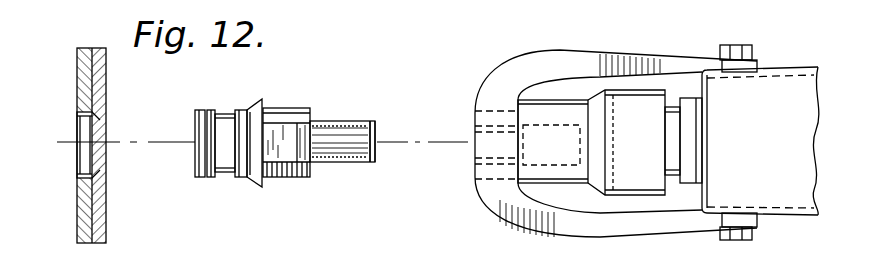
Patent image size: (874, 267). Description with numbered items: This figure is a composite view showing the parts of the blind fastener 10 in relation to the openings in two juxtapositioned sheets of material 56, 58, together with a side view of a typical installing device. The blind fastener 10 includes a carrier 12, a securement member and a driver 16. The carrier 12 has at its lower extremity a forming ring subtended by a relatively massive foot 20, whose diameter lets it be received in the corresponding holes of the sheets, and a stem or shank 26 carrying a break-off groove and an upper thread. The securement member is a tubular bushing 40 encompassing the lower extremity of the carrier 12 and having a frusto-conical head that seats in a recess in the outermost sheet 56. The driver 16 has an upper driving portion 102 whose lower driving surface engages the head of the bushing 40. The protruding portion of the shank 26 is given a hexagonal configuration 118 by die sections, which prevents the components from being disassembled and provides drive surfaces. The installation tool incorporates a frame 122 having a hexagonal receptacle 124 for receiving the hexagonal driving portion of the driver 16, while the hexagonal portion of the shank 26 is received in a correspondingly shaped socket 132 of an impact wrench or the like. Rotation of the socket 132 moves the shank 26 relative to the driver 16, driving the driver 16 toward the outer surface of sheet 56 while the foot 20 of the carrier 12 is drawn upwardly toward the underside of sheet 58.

The blind fastener 10 is at (280, 144).
The carrier 12 is at (367, 128).
The driver 16 is at (286, 185).
The foot 20 is at (195, 128).
The shank 26 is at (375, 122).
The tubular bushing 40 is at (243, 104).
The outermost sheet of material 56 is at (106, 200).
The sheet of material 58 is at (78, 198).
The upper driving portion 102 is at (300, 138).
The hexagonal configuration 118 is at (332, 122).
The frame 122 is at (587, 130).
The hexagonal receptacle 124 is at (492, 172).
The socket 132 is at (563, 100).